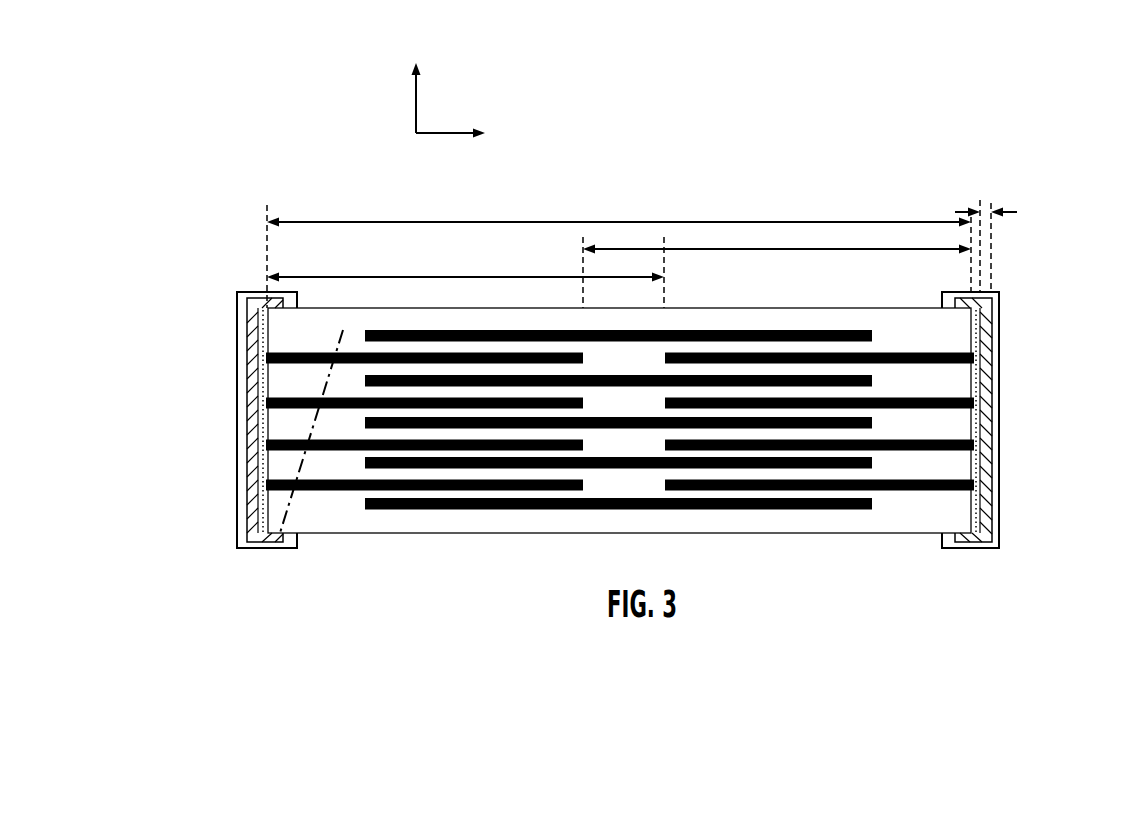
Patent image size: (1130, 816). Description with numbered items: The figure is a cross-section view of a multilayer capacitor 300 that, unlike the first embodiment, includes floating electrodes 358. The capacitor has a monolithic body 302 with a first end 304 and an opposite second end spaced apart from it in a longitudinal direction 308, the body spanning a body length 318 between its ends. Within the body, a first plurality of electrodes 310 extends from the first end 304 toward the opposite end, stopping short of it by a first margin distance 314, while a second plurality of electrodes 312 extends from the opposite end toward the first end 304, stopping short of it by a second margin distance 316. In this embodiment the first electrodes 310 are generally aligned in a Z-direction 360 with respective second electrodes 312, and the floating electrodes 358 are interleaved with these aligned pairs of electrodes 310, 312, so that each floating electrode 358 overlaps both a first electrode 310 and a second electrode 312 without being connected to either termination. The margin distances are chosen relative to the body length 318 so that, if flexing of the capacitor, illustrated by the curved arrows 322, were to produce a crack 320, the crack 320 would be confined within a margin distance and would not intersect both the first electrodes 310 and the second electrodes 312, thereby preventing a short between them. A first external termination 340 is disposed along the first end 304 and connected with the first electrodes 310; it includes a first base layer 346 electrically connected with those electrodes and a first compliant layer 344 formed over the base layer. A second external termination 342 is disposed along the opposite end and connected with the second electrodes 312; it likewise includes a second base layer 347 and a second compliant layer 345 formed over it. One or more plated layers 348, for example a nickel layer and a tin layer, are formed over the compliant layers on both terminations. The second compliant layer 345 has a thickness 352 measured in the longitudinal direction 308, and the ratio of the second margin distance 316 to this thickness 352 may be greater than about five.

The multilayer capacitor 300 is at (232, 175).
The monolithic body 302 is at (795, 307).
The first end 304 is at (258, 300).
The longitudinal direction 308 is at (469, 134).
The first plurality of electrodes 310 is at (261, 487).
The second plurality of electrodes 312 is at (972, 358).
The first margin distance 314 is at (325, 277).
The second margin distance 316 is at (850, 249).
The body length 318 is at (603, 222).
The crack 320 is at (290, 513).
The arrows 322 is at (205, 608).
The first external termination 340 is at (230, 372).
The second external termination 342 is at (1000, 283).
The first compliant layer 344 is at (258, 487).
The second compliant layer 345 is at (993, 306).
The first base layer 346 is at (258, 495).
The second base layer 347 is at (988, 323).
The plated layers 348 is at (240, 513).
The thickness of second compliant layer 352 is at (963, 212).
The floating electrodes 358 is at (872, 337).
The Z-direction 360 is at (414, 82).